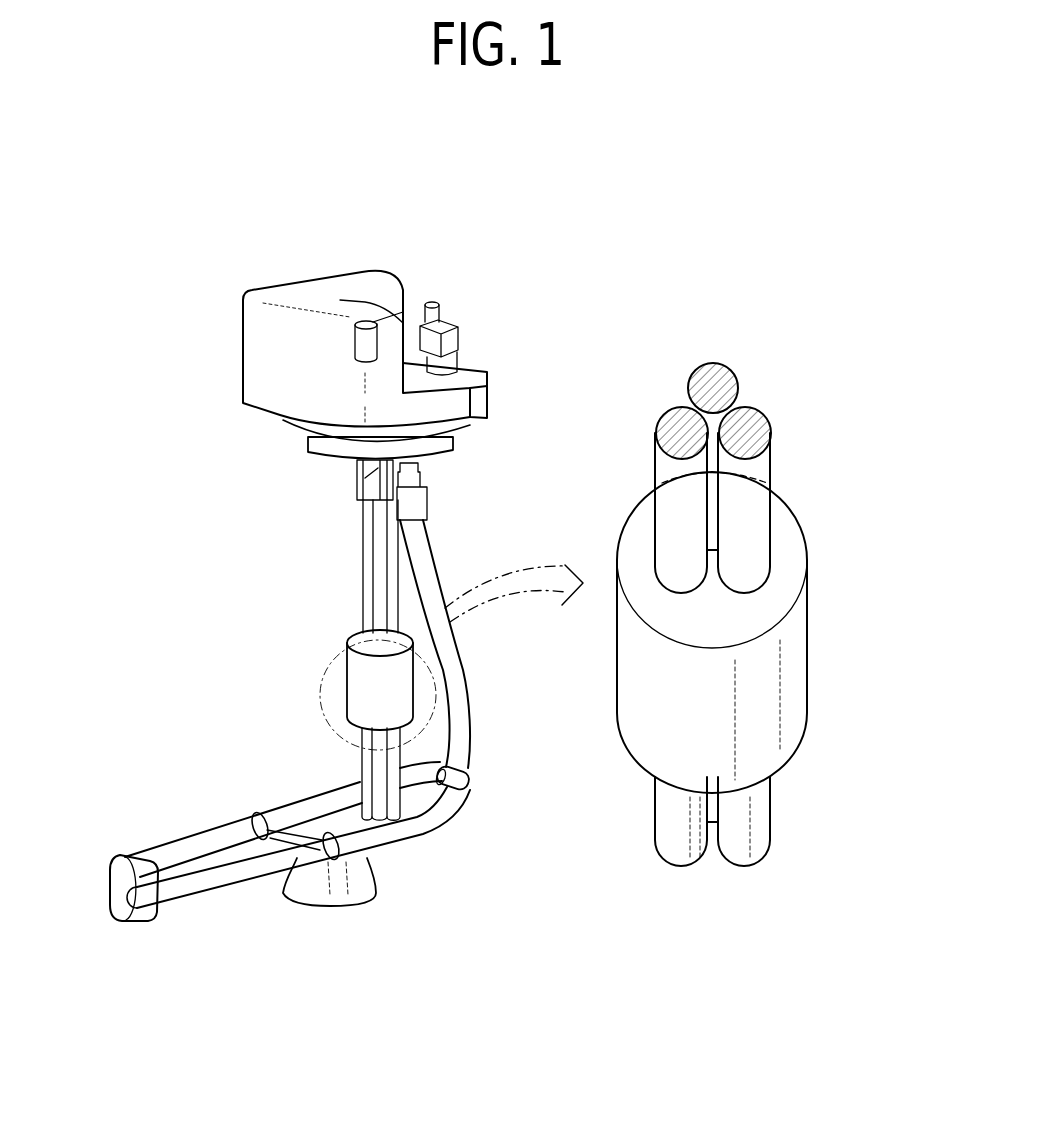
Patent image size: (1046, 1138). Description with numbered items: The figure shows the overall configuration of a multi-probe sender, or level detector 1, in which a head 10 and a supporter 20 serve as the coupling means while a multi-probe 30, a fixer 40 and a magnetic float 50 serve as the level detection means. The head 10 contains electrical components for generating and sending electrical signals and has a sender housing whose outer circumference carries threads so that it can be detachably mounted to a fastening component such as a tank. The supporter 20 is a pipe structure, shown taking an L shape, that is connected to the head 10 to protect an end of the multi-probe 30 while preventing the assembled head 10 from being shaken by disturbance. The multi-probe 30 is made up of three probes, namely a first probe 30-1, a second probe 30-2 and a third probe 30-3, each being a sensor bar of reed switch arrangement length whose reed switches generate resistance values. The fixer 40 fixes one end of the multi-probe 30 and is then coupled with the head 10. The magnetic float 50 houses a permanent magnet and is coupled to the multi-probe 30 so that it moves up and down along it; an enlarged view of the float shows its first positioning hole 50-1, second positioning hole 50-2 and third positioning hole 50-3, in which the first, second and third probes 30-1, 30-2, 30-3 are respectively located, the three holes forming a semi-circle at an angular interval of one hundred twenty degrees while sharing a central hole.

The multi-probe sender 1 is at (124, 266).
The head 10 is at (447, 320).
The supporter 20 is at (256, 813).
The multi-probe 30 is at (153, 537).
The first probe 30-1 is at (378, 537).
The second probe 30-2 is at (380, 580).
The third probe 30-3 is at (385, 603).
The fixer 40 is at (373, 470).
The magnetic float 50 is at (358, 698).
The first positioning hole 50-1 is at (663, 593).
The second positioning hole 50-2 is at (765, 598).
The third positioning hole 50-3 is at (733, 512).